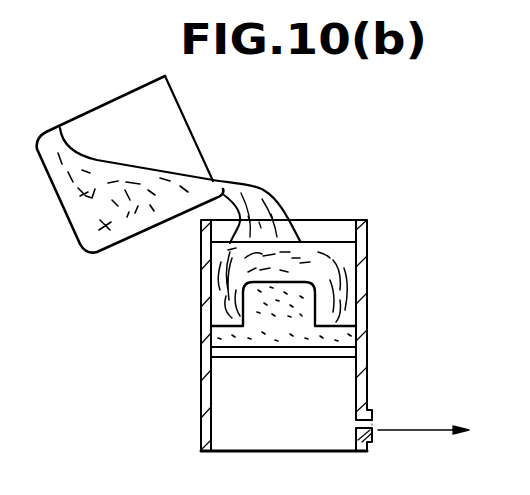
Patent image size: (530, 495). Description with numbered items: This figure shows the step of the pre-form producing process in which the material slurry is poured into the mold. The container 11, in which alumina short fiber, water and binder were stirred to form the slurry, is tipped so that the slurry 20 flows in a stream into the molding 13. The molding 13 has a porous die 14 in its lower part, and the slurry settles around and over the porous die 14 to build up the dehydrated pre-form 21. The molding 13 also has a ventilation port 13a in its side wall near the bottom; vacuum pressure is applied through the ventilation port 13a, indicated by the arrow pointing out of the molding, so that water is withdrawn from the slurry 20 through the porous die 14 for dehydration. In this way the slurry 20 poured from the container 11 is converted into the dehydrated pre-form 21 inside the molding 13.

The container 11 is at (80, 117).
The slurry 20 is at (250, 183).
The dehydrated pre-form 21 is at (310, 243).
The molding 13 is at (367, 290).
The ventilation port 13a is at (373, 437).
The porous die 14 is at (243, 337).